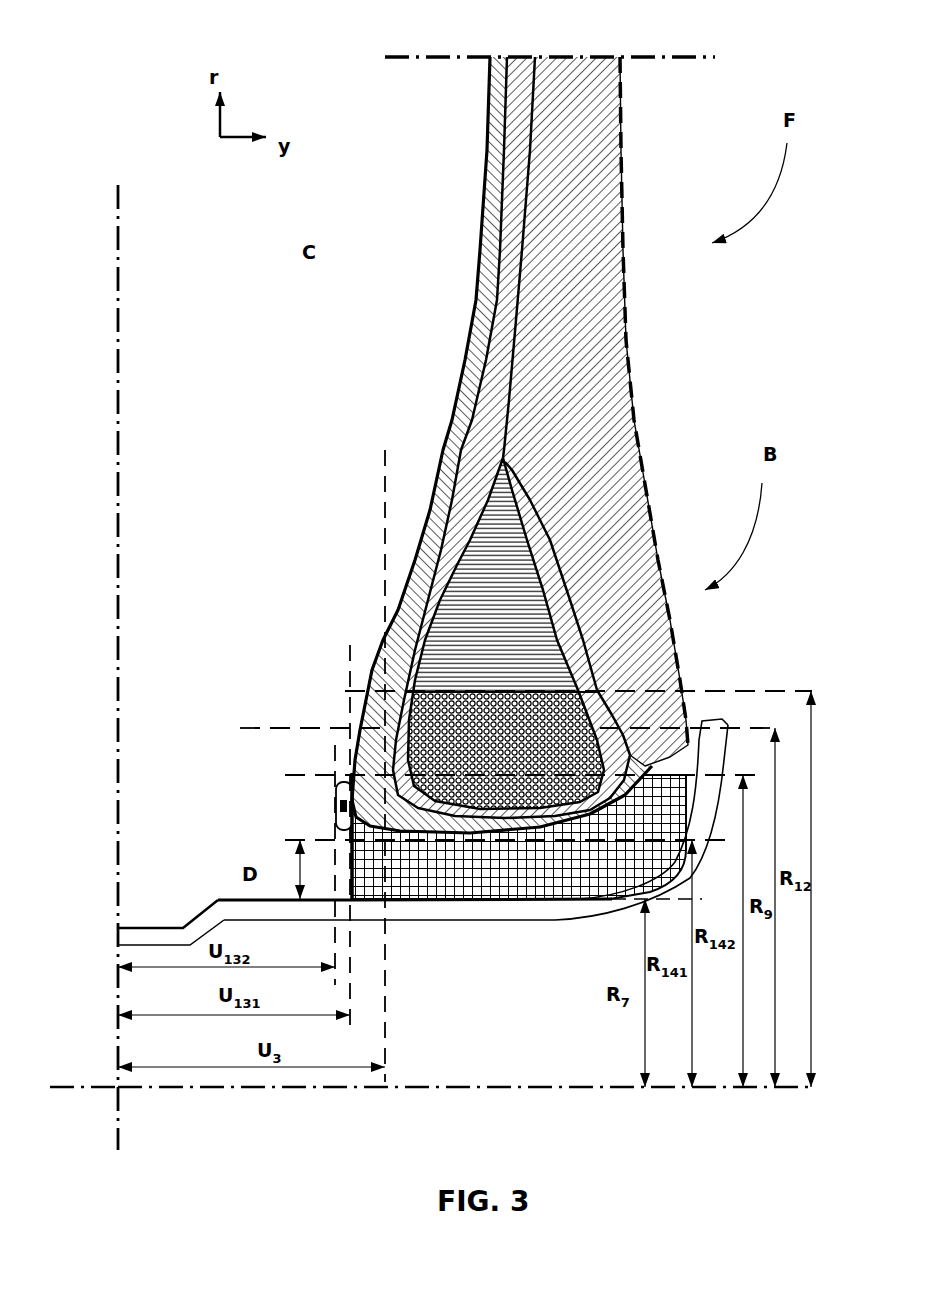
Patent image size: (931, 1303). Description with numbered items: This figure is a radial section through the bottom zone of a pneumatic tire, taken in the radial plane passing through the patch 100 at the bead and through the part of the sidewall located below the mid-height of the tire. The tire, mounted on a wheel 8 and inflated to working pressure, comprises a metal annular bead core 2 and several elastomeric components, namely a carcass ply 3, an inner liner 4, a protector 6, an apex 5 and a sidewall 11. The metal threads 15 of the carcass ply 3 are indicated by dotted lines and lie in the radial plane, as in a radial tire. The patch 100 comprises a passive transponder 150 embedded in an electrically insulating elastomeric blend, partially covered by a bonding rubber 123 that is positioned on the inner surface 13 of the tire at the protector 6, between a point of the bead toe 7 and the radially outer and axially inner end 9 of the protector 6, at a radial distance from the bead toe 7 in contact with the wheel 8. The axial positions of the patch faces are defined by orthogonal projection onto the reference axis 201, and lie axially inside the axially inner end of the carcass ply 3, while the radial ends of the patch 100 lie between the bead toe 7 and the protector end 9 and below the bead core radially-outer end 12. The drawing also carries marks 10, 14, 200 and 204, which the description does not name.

The metal annular bead core 2 is at (613, 663).
The carcass ply 3 is at (530, 225).
The inner liner 4 is at (490, 242).
The apex 5 is at (483, 584).
The protector 6 is at (425, 855).
The bead toe 7 is at (387, 930).
The wheel 8 is at (575, 905).
The radially outer and axially inner end of the protector 9 is at (362, 726).
The upturned lip 10 is at (697, 732).
The sidewall 11 is at (565, 150).
The bead core radially-outer end 12 is at (651, 568).
The inner surface of the pneumatic tire 13 is at (478, 347).
The outer skin upper portion 14 is at (628, 372).
The metal threads of the carcass ply 15 is at (497, 142).
The patch 100 is at (287, 808).
The bonding rubber 123 is at (337, 777).
The passive transponder 150 is at (334, 806).
The datum origin 200 is at (125, 1090).
The reference axis 201 is at (478, 1089).
The vertical axis line 204 is at (122, 330).